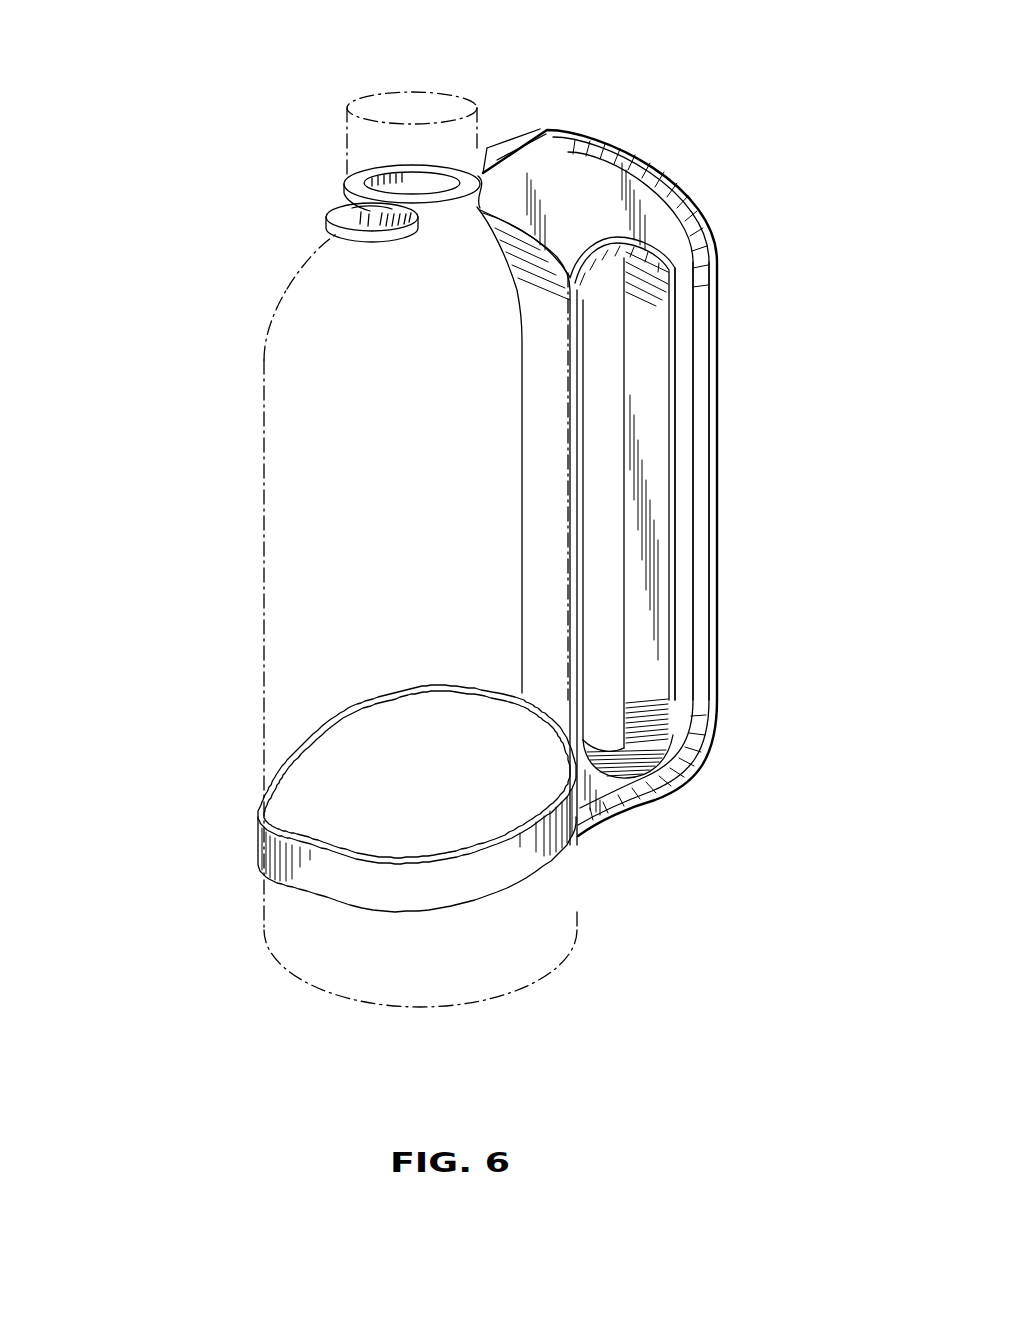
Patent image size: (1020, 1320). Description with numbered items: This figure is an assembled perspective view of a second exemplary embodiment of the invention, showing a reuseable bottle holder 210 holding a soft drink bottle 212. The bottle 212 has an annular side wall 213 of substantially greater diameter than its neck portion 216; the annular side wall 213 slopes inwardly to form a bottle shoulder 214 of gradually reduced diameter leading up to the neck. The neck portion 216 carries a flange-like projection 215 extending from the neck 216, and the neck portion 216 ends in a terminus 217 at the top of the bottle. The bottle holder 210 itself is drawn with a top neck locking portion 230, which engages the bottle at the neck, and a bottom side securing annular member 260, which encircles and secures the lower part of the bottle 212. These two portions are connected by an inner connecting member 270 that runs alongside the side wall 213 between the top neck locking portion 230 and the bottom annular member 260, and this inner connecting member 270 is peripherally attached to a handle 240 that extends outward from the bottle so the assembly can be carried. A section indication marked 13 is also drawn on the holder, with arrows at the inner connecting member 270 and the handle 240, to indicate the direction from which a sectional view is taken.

The reuseable bottle holder 210 is at (615, 487).
The soft drink bottle 212 is at (285, 440).
The annular side wall 213 is at (262, 355).
The bottle shoulder 214 is at (332, 234).
The flange-like projection 215 is at (341, 175).
The neck portion 216 is at (332, 210).
The terminus 217 is at (452, 114).
The top neck locking portion 230 is at (397, 251).
The handle 240 is at (790, 625).
The bottom side securing annular member 260 is at (232, 826).
The inner connecting member 270 is at (525, 568).
The section line 13 is at (760, 377).